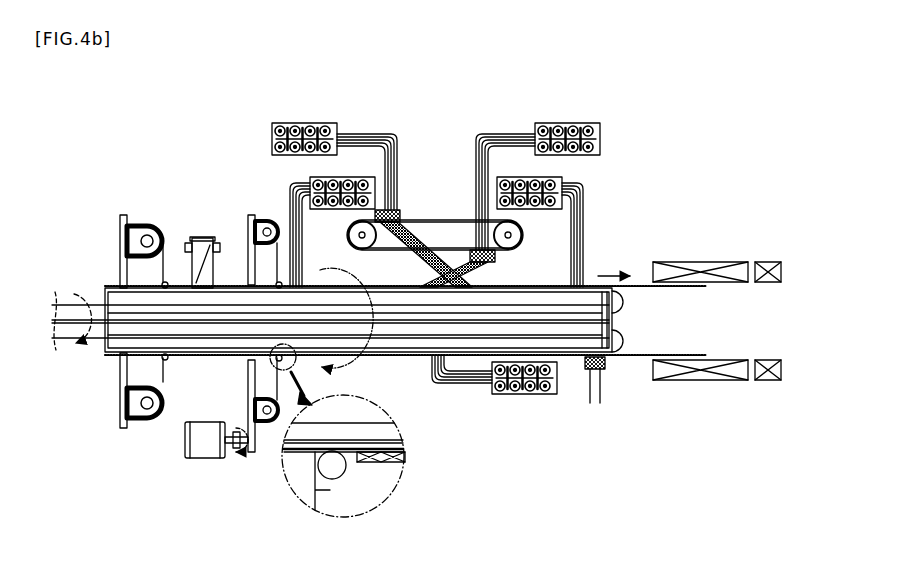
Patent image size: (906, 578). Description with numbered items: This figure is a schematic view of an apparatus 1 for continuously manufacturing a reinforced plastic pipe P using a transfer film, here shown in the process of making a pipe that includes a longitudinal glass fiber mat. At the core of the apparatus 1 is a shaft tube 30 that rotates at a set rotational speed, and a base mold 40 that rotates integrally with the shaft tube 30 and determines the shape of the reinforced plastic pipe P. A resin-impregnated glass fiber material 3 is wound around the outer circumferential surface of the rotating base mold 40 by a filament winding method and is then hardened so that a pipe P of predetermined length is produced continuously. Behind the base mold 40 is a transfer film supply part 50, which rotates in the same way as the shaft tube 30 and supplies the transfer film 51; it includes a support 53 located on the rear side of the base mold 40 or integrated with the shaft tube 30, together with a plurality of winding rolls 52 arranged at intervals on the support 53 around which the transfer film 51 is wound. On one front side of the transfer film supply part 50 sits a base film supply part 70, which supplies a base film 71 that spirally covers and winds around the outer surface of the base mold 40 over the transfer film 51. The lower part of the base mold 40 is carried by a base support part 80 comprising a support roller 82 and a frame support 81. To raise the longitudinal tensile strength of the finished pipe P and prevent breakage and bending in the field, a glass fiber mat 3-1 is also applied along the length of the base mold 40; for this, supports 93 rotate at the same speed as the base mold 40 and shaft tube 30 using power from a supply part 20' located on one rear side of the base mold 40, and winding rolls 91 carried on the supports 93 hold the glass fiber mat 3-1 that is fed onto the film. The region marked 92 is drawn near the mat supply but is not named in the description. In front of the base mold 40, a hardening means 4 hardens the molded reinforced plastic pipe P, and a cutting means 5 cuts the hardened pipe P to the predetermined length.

The apparatus for continuously manufacturing a reinforced plastic pipe 1 is at (158, 116).
The resin-impregnated glass fiber material 3 is at (397, 163).
The glass fiber mat 3-1 is at (254, 392).
The hardening means 4 is at (690, 262).
The cutting means 5 is at (766, 262).
The supply part 20' is at (216, 463).
The shaft tube 30 is at (66, 335).
The base mold 40 is at (382, 430).
The transfer film supply part 50 is at (110, 220).
The transfer film 51 is at (163, 268).
The winding rolls 52 is at (147, 410).
The support 53 is at (124, 246).
The base film supply part 70 is at (196, 238).
The base film 71 is at (218, 247).
The base support part 80 is at (591, 408).
The frame support 81 is at (588, 398).
The support roller 82 is at (605, 369).
The winding rolls 91 is at (267, 221).
The rotation direction / detail 92 is at (282, 283).
The supports 93 is at (250, 215).
The reinforced plastic pipe P is at (668, 355).